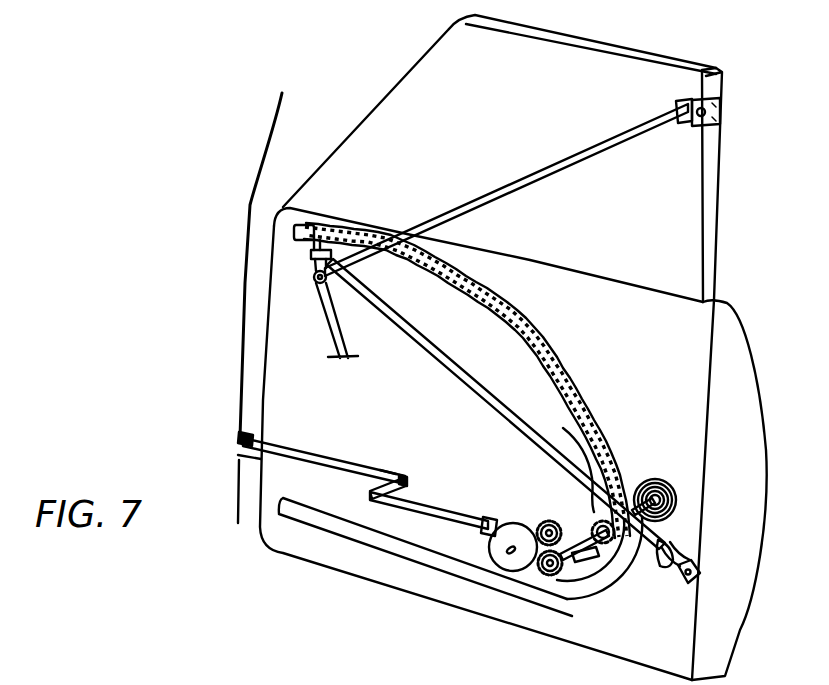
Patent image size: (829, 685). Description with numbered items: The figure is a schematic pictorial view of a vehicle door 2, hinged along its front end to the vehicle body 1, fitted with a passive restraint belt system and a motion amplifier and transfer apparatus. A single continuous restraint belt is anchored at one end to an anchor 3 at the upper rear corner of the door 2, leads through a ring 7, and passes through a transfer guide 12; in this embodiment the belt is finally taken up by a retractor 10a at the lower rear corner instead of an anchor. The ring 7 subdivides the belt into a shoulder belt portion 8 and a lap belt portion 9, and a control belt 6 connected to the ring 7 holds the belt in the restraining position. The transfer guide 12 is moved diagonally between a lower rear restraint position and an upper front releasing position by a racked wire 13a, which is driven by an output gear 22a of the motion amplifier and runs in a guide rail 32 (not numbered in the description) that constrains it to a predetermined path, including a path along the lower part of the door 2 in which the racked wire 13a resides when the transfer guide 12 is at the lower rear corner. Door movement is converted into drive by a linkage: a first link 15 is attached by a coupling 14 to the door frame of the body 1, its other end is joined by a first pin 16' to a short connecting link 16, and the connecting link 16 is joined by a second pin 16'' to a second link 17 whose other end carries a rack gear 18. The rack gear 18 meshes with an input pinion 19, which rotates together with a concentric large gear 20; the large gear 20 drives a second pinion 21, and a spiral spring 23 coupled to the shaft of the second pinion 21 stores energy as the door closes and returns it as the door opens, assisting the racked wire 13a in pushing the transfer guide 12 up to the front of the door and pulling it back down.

The vehicle body 1 is at (240, 153).
The door 2 is at (727, 378).
The anchor 3 is at (703, 70).
The control belt 6 is at (345, 336).
The ring 7 is at (319, 283).
The shoulder belt portion 8 is at (540, 165).
The lap belt portion 9 is at (490, 366).
The retractor 10a is at (665, 583).
The transfer guide 12 is at (313, 250).
The racked wire 13a is at (558, 353).
The coupling 14 is at (246, 437).
The first link 15 is at (328, 450).
The connecting link 16 is at (386, 439).
The first pin 16' is at (425, 435).
The second pin 16'' is at (350, 488).
The second link 17 is at (440, 500).
The rack gear 18 is at (498, 522).
The input pinion 19 is at (555, 549).
The large gear 20 is at (540, 522).
The second pinion 21 is at (562, 560).
The output gear 22a is at (558, 449).
The spiral spring 23 is at (660, 485).
The lower guide rail 32 is at (418, 560).